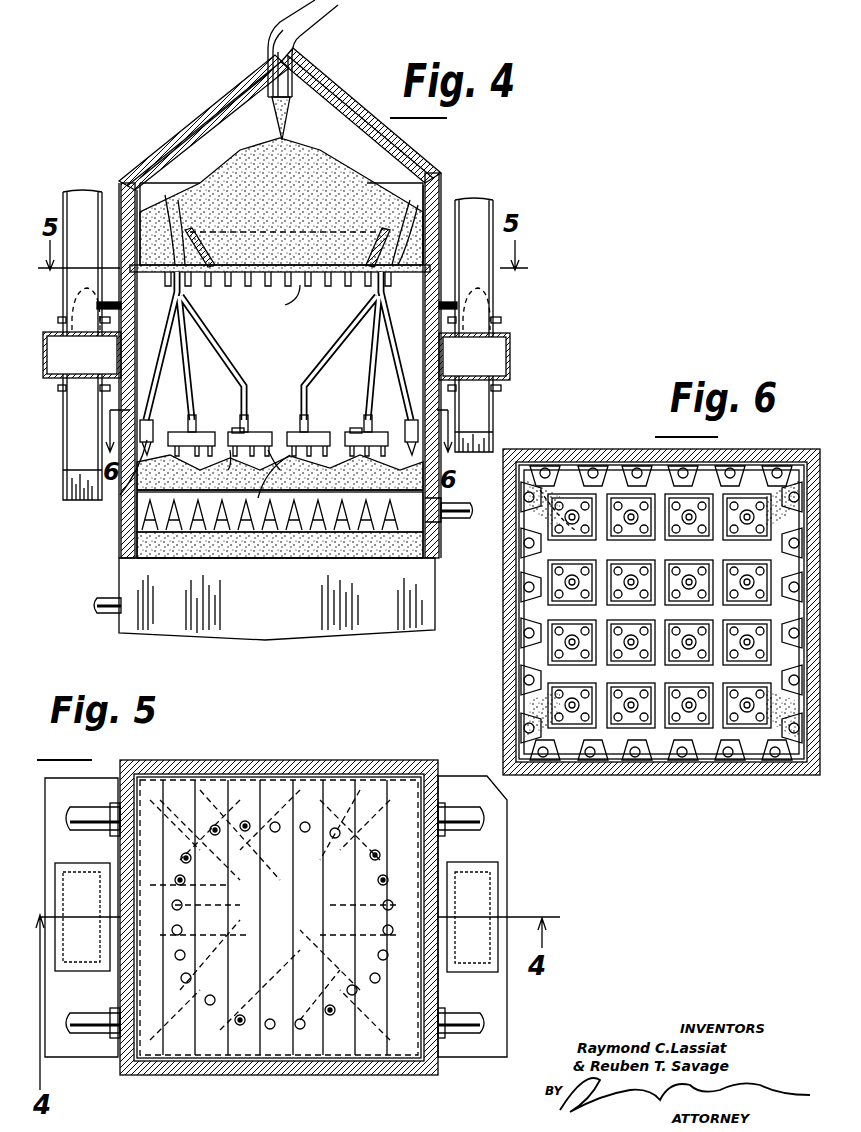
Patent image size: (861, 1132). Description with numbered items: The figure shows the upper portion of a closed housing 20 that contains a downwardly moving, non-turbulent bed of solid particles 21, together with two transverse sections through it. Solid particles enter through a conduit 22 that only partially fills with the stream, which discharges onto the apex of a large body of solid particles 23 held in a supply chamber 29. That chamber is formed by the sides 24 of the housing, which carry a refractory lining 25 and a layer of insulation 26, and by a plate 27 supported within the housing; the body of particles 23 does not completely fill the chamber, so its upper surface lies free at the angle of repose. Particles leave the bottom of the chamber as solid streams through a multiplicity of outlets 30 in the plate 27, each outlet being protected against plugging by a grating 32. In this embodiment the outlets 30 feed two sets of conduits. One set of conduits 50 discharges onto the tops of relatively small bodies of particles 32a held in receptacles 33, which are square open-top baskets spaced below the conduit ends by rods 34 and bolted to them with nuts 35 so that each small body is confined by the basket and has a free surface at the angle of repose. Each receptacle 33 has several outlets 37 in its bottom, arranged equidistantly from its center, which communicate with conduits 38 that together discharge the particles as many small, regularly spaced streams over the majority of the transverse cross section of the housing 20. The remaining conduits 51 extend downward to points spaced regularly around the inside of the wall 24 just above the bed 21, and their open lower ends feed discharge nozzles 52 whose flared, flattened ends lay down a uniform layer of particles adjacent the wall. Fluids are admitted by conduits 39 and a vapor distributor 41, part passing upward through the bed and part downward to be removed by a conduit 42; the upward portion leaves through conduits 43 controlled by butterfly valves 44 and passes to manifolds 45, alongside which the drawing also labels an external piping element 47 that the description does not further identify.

In FIG. 4, the housing 20 is at (285, 602).
In FIG. 6, the housing 20 is at (800, 443).
In FIG. 5, the housing 20 is at (440, 764).
In FIG. 4, the bed of solid particles 21 is at (440, 600).
In FIG. 6, the bed of solid particles 21 is at (530, 585).
In FIG. 4, the conduit 22 is at (300, 15).
In FIG. 4, the body of solid particles 23 is at (382, 200).
In FIG. 4, the sides of housing 24 is at (126, 180).
In FIG. 6, the sides of housing 24 is at (555, 457).
In FIG. 5, the sides of housing 24 is at (280, 762).
In FIG. 4, the refractory lining 25 is at (128, 172).
In FIG. 6, the refractory lining 25 is at (585, 464).
In FIG. 5, the refractory lining 25 is at (298, 764).
In FIG. 4, the layer of insulation 26 is at (136, 200).
In FIG. 6, the layer of insulation 26 is at (527, 454).
In FIG. 5, the layer of insulation 26 is at (328, 764).
In FIG. 4, the plate 27 is at (418, 275).
In FIG. 5, the plate 27 is at (378, 772).
In FIG. 4, the supply chamber 29 is at (248, 105).
In FIG. 4, the outlets 30 is at (432, 222).
In FIG. 5, the outlets 30 is at (330, 1005).
In FIG. 4, the grating 32 is at (190, 232).
In FIG. 5, the grating 32 is at (183, 772).
In FIG. 4, the small bodies of particles 32a is at (105, 505).
In FIG. 4, the receptacles 33 is at (292, 424).
In FIG. 6, the receptacles 33 is at (672, 755).
In FIG. 4, the rods 34 is at (258, 425).
In FIG. 6, the rods 34 is at (690, 685).
In FIG. 4, the nuts 35 is at (280, 472).
In FIG. 6, the outlets 37 is at (618, 725).
In FIG. 4, the conduits 38 is at (282, 468).
In FIG. 6, the conduits 38 is at (628, 722).
In FIG. 4, the conduits 39 is at (475, 512).
In FIG. 4, the vapor distributor 41 is at (360, 532).
In FIG. 4, the conduit 42 is at (108, 598).
In FIG. 4, the conduits 43 is at (72, 298).
In FIG. 5, the conduits 43 is at (92, 815).
In FIG. 4, the butterfly valves 44 is at (450, 262).
In FIG. 5, the butterfly valves 44 is at (110, 830).
In FIG. 4, the manifolds 45 is at (55, 378).
In FIG. 5, the manifolds 45 is at (70, 975).
In FIG. 4, the riser pipe 47 is at (66, 196).
In FIG. 5, the riser pipe 47 is at (90, 1035).
In FIG. 4, the conduits 50 is at (310, 395).
In FIG. 6, the conduits 50 is at (690, 725).
In FIG. 5, the conduits 50 is at (275, 863).
In FIG. 4, the conduits 51 is at (273, 344).
In FIG. 6, the conduits 51 is at (740, 760).
In FIG. 5, the conduits 51 is at (128, 1078).
In FIG. 4, the discharge nozzles 52 is at (405, 432).
In FIG. 6, the discharge nozzles 52 is at (790, 762).